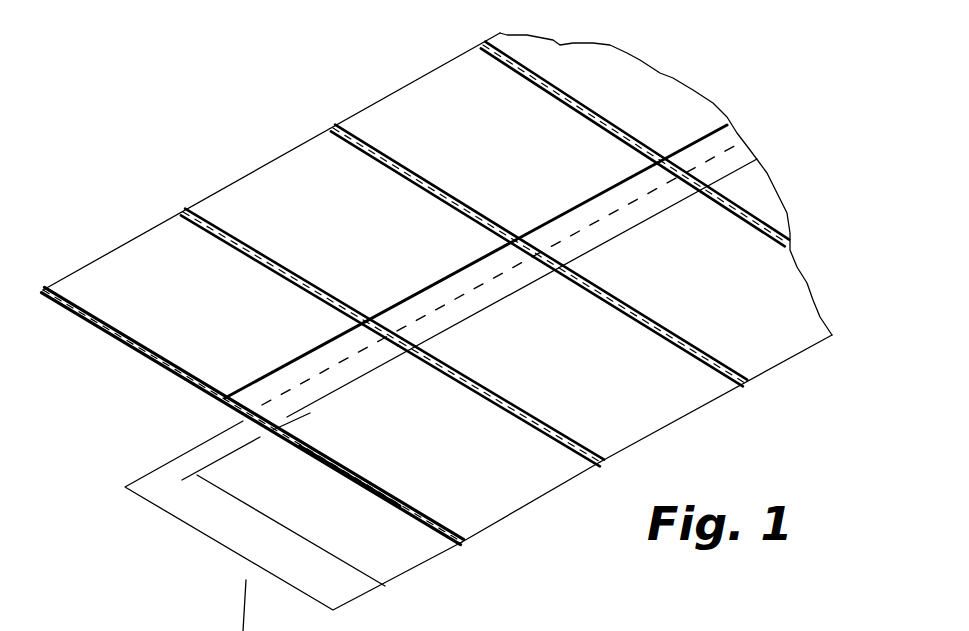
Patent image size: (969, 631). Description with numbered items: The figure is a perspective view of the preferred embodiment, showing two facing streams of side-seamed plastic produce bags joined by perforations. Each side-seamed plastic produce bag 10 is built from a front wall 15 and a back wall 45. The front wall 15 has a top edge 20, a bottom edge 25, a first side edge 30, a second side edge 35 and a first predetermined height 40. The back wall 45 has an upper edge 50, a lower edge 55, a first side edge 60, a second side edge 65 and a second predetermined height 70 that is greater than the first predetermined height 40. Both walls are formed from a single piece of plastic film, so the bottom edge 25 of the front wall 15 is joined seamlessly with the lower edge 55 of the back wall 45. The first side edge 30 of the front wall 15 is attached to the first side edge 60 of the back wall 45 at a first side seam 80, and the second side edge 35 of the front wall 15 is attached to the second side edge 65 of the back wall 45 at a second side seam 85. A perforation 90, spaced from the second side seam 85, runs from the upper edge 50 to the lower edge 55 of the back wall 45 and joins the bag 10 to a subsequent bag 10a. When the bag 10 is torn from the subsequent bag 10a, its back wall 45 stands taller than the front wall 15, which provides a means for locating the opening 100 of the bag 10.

The side-seamed plastic produce bag 10 is at (549, 525).
The subsequent bag 10a is at (695, 437).
The front wall 15 is at (398, 470).
The top edge 20 is at (339, 397).
The bottom edge 25 is at (567, 445).
The first side edge 30 is at (360, 483).
The second side edge 35 is at (467, 372).
The first predetermined height 40 is at (260, 515).
The back wall 45 is at (280, 410).
The upper edge 50 is at (293, 388).
The lower edge 55 is at (483, 535).
The first side edge 60 is at (417, 527).
The second side edge 65 is at (547, 420).
The second predetermined height 70 is at (193, 527).
The first side seam 80 is at (490, 400).
The second side seam 85 is at (490, 388).
The perforation 90 is at (453, 353).
The opening 100 is at (366, 370).